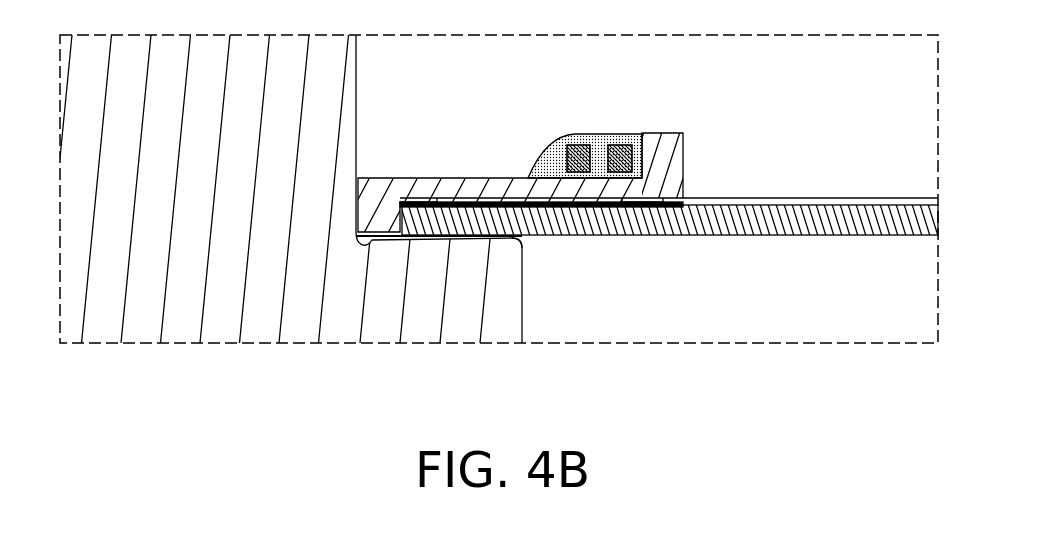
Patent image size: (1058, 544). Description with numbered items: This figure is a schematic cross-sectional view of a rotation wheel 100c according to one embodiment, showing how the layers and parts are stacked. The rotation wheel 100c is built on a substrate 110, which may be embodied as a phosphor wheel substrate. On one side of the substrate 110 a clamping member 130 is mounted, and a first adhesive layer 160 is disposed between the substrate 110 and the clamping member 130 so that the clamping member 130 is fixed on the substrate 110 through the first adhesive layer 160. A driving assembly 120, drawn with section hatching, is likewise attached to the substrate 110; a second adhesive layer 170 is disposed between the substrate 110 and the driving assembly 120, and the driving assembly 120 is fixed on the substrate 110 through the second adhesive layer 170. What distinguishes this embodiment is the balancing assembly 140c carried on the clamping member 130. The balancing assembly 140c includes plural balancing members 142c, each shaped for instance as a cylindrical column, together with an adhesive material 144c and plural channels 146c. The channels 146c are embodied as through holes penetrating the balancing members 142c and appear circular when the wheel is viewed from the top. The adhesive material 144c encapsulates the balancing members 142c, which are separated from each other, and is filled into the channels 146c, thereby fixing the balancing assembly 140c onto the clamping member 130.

The rotation wheel 100c is at (822, 422).
The substrate 110 is at (697, 223).
The driving assembly 120 is at (327, 323).
The clamping member 130 is at (672, 168).
The balancing assembly 140c is at (576, 126).
The balancing member 142c is at (572, 133).
The adhesive material 144c is at (632, 133).
The channel 146c is at (590, 161).
The first adhesive layer 160 is at (602, 207).
The second adhesive layer 170 is at (522, 239).